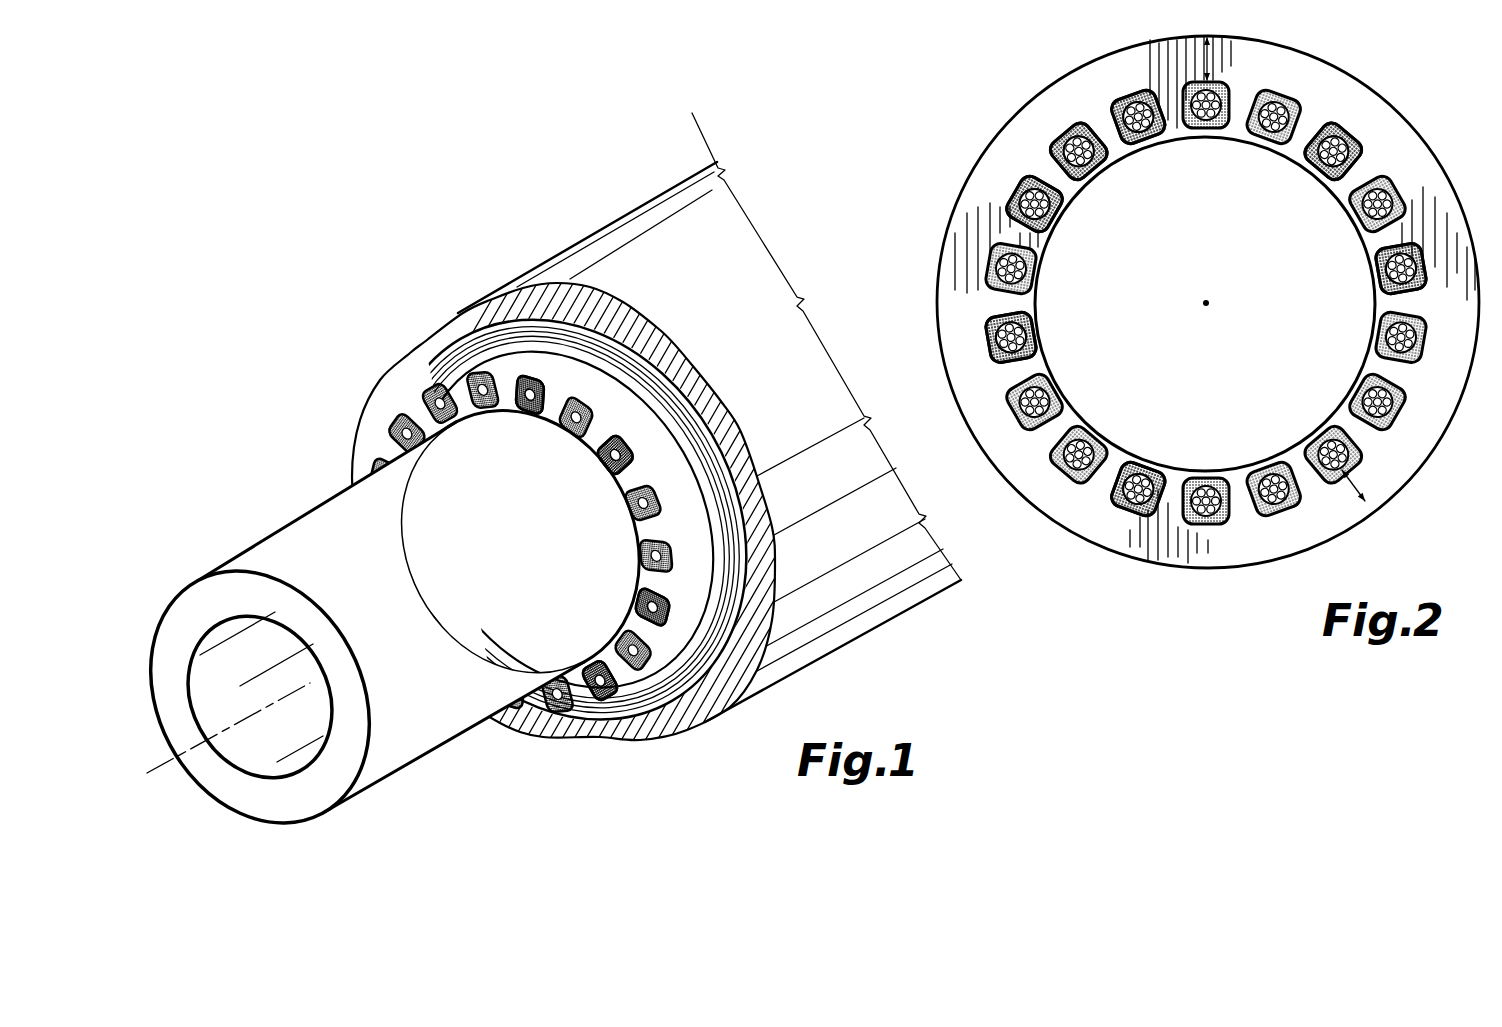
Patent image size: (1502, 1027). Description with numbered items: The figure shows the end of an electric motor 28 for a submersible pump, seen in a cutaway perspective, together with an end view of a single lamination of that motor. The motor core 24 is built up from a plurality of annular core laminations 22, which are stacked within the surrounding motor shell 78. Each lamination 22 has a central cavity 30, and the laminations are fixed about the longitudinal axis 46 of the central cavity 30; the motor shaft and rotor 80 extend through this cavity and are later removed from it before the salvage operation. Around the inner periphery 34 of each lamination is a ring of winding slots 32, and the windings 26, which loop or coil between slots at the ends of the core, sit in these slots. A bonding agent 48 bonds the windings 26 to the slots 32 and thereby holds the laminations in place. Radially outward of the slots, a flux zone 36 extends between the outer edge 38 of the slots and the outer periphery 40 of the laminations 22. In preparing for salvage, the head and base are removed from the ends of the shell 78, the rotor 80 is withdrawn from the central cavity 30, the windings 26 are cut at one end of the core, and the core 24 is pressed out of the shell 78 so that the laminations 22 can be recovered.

In FIG. 1, the core laminations 22 is at (642, 692).
In FIG. 2, the core laminations 22 is at (1377, 118).
In FIG. 1, the core 24 is at (660, 378).
In FIG. 1, the windings 26 is at (400, 420).
In FIG. 2, the windings 26 is at (1037, 257).
In FIG. 1, the electric motor 28 is at (495, 254).
In FIG. 2, the central cavity 30 is at (1246, 247).
In FIG. 1, the winding slots 32 is at (585, 398).
In FIG. 2, the winding slots 32 is at (1222, 501).
In FIG. 2, the inner periphery 34 is at (1107, 437).
In FIG. 2, the flux zone 36 is at (1372, 497).
In FIG. 1, the outer edge 38 is at (672, 565).
In FIG. 2, the outer edge 38 is at (983, 328).
In FIG. 1, the outer periphery 40 is at (690, 510).
In FIG. 2, the outer periphery 40 is at (963, 185).
In FIG. 1, the longitudinal axis 46 is at (170, 758).
In FIG. 2, the longitudinal axis 46 is at (1212, 304).
In FIG. 1, the bonding agent 48 is at (617, 693).
In FIG. 2, the bonding agent 48 is at (1133, 505).
In FIG. 1, the motor shell 78 is at (664, 218).
In FIG. 1, the rotor 80 is at (325, 535).